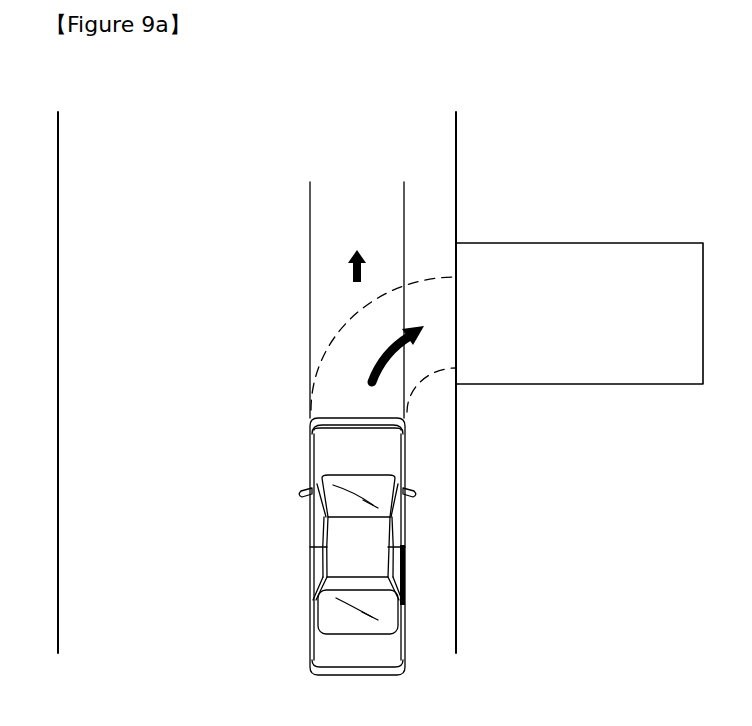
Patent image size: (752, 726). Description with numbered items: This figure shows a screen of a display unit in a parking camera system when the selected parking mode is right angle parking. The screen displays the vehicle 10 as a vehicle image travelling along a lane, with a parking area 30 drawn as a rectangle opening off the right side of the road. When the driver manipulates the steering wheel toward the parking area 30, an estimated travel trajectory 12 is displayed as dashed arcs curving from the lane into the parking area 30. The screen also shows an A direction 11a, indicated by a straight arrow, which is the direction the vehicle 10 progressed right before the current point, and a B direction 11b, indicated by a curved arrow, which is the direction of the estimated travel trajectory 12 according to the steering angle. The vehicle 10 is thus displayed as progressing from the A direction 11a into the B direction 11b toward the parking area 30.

The vehicle 10 is at (296, 449).
The A direction 11a is at (352, 268).
The B direction 11b is at (418, 330).
The estimated travel trajectory 12 is at (426, 278).
The parking area 30 is at (541, 253).